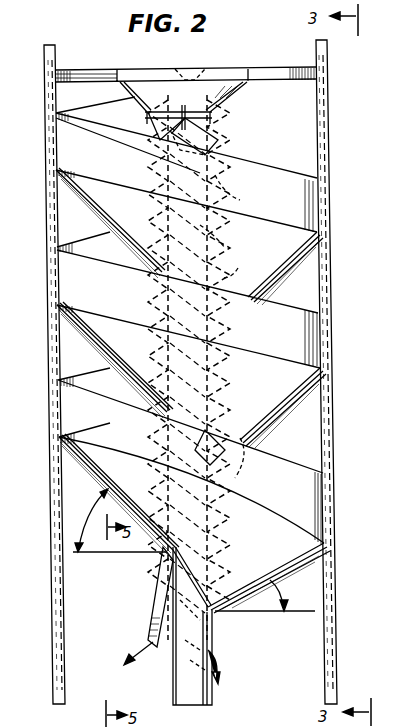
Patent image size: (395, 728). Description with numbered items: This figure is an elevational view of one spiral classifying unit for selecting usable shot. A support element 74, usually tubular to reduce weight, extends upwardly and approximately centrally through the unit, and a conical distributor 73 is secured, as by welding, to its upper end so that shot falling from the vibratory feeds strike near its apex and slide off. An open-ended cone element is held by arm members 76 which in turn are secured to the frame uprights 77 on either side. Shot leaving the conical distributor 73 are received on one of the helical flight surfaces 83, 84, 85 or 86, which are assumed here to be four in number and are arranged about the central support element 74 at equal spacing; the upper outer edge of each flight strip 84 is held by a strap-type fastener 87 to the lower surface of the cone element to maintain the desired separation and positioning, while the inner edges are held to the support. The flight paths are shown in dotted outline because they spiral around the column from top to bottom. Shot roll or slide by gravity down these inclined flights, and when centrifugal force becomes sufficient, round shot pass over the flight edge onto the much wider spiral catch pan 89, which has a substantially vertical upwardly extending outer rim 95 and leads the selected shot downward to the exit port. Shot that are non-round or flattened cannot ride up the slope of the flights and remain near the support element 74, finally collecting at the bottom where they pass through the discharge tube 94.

The conical distributor 73 is at (210, 66).
The support element 74 is at (154, 676).
The arm members 76 is at (80, 71).
The uprights 77 is at (331, 142).
The flight surface 83 is at (222, 142).
The flight strip 84 is at (222, 238).
The flight surface 85 is at (220, 193).
The flight surface 86 is at (238, 160).
The fastener 87 is at (226, 117).
The catch pan 89 is at (112, 212).
The discharge tube 94 is at (214, 642).
The outer rim 95 is at (66, 143).